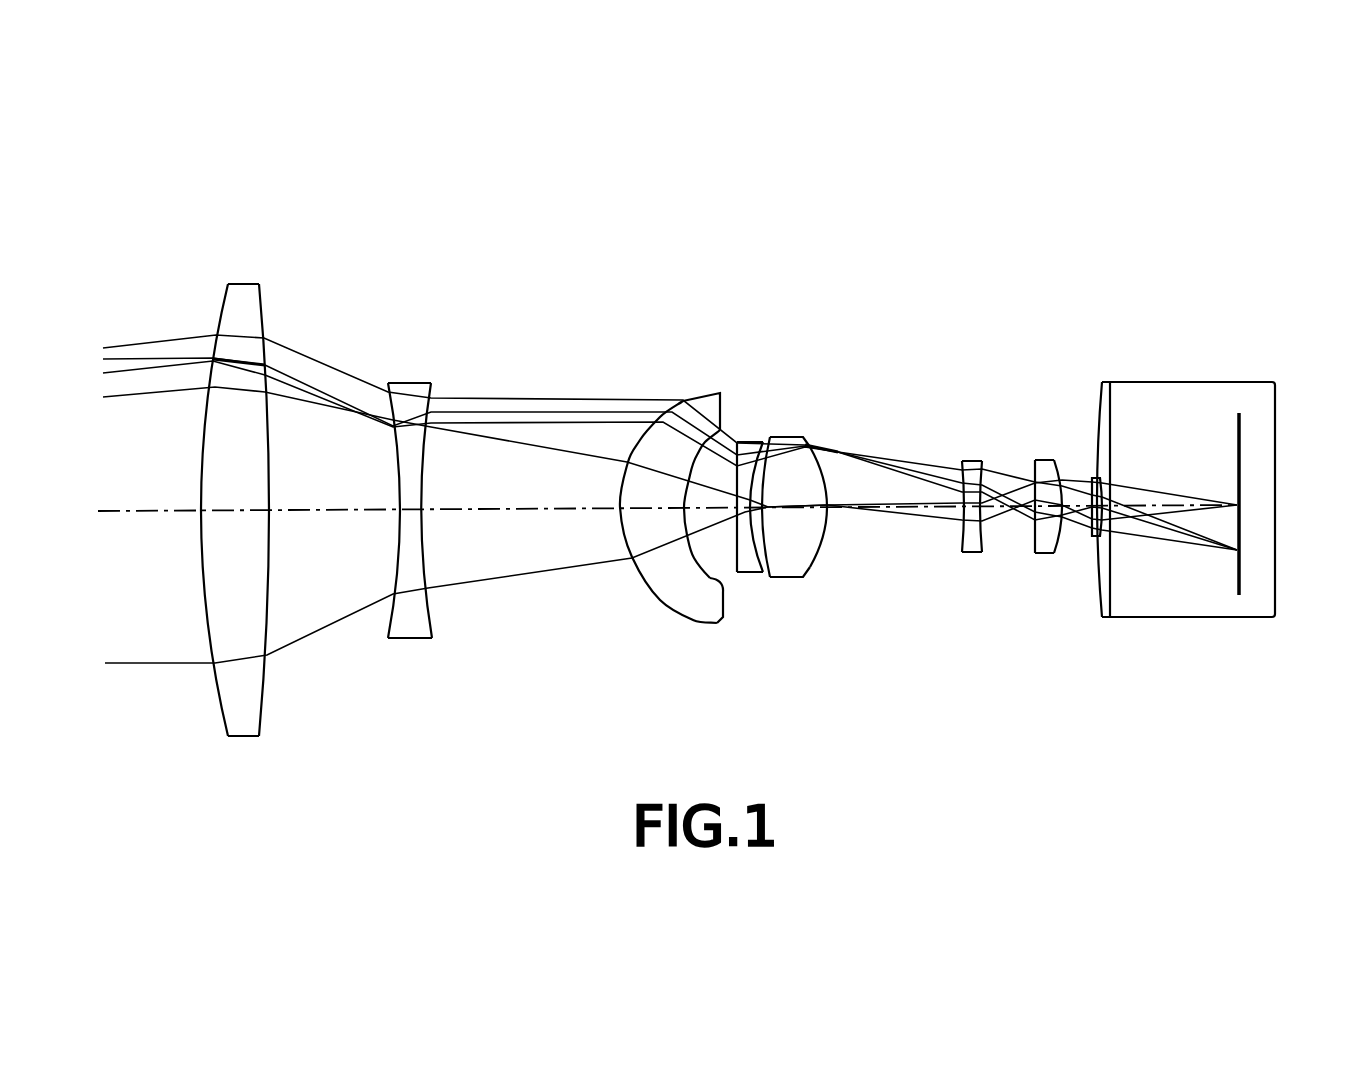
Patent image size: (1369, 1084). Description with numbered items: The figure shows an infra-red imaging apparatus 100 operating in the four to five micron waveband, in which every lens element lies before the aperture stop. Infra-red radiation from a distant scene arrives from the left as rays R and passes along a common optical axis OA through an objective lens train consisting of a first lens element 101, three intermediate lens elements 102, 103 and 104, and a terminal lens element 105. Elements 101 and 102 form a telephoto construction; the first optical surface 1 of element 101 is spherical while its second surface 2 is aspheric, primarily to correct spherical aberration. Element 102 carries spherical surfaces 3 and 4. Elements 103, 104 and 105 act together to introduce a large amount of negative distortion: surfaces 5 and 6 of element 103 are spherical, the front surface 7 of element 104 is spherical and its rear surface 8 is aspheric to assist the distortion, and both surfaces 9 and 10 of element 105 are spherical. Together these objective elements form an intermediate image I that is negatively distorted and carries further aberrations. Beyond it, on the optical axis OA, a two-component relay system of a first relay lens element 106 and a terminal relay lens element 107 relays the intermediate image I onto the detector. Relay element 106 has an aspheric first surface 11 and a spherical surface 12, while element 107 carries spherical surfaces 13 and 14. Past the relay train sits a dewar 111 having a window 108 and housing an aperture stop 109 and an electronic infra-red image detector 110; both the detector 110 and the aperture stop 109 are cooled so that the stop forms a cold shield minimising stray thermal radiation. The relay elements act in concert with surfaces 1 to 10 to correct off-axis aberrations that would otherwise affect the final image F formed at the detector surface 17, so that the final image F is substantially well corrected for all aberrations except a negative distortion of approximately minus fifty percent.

The optical apparatus 100 is at (634, 283).
The first lens element 101 is at (229, 479).
The intermediate lens element 102 is at (406, 472).
The intermediate lens element 103 is at (662, 493).
The intermediate lens element 104 is at (760, 512).
The terminal lens element 105 is at (823, 510).
The first relay lens element 106 is at (954, 498).
The terminal relay lens element 107 is at (1046, 510).
The window 108 is at (1094, 540).
The aperture stop 109 is at (1146, 469).
The electronic infra-red image detector 110 is at (1243, 440).
The dewar 111 is at (1220, 515).
The first optical surface 1 is at (203, 481).
The second surface 2 is at (271, 527).
The third surface 3 is at (398, 478).
The fourth surface 4 is at (424, 552).
The fifth surface 5 is at (641, 583).
The sixth surface 6 is at (724, 618).
The front surface 7 is at (735, 480).
The rear surface 8 is at (775, 568).
The ninth surface 9 is at (768, 455).
The tenth surface 10 is at (836, 465).
The first surface of relay lens element 11 is at (963, 541).
The twelfth surface 12 is at (979, 553).
The thirteenth surface 13 is at (1028, 470).
The fourteenth surface 14 is at (1082, 468).
The aperture stop surface 17 is at (1105, 418).
The optical axis OA is at (100, 511).
The rays R is at (88, 338).
The intermediate image I is at (850, 524).
The final image F is at (1226, 560).